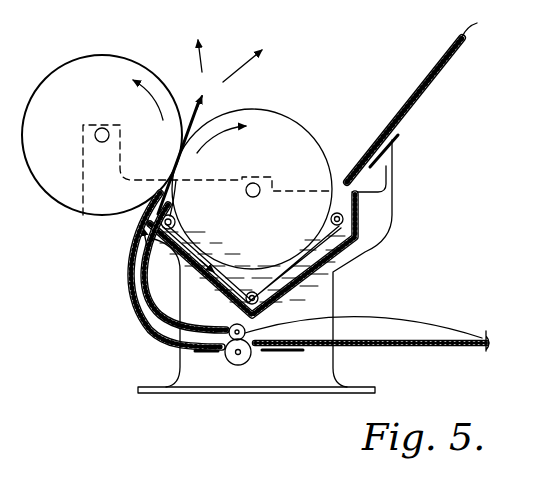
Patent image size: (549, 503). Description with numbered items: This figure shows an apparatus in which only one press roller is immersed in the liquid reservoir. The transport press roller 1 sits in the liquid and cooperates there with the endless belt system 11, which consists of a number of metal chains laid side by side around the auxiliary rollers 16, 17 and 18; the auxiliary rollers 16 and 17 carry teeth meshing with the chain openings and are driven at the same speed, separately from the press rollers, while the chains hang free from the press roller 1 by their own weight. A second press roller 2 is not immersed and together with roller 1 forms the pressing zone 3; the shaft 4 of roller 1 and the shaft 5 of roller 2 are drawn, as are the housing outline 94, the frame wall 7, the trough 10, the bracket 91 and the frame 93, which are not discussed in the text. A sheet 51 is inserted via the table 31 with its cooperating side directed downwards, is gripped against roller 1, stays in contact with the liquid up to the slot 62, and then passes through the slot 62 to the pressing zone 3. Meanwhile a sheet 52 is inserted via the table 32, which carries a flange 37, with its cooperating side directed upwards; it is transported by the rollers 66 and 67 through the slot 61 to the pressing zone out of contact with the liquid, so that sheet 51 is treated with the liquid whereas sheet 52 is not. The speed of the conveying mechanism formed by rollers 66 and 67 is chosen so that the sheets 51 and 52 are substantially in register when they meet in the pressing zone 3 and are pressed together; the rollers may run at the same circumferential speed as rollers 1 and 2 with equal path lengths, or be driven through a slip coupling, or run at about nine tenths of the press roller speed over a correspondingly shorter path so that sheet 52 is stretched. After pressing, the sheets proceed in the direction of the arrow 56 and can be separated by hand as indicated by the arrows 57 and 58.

The press roller 1 is at (289, 124).
The press roller 2 is at (148, 80).
The pressing zone 3 is at (177, 174).
The cylinder shaft 4 is at (255, 183).
The roll shaft 5 is at (104, 128).
The frame wall 7 is at (347, 262).
The ink trough 10 is at (300, 272).
The endless belt system 11 is at (212, 258).
The auxiliary roller 16 is at (330, 216).
The auxiliary roller 17 is at (175, 219).
The auxiliary roller 18 is at (256, 292).
The table 31 is at (410, 114).
The table 32 is at (383, 348).
The flange 37 is at (481, 349).
The sheet 51 is at (392, 120).
The sheet 52 is at (381, 312).
The arrow 56 is at (203, 104).
The arrow 57 is at (236, 72).
The arrow 58 is at (190, 56).
The slot 61 is at (140, 310).
The slot 62 is at (176, 193).
The roller 66 is at (226, 360).
The roller 67 is at (232, 326).
The bracket 91 is at (392, 170).
The frame 93 is at (180, 368).
The housing outline 94 is at (83, 180).